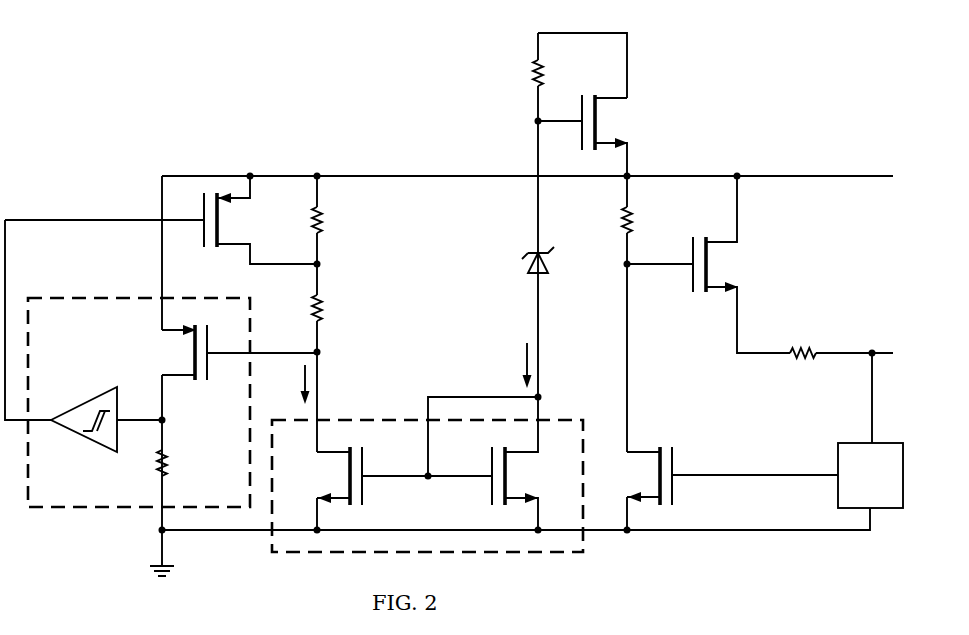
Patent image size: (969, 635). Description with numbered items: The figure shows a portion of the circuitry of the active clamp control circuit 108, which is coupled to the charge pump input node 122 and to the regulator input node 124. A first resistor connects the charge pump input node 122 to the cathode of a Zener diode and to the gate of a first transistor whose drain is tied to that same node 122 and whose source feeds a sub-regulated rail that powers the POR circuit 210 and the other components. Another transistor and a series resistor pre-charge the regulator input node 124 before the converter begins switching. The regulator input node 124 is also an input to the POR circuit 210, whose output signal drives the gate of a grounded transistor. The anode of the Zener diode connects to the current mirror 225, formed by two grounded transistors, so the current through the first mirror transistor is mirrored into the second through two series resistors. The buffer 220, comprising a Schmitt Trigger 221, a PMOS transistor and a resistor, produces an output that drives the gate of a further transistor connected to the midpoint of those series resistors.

The active clamp control circuit 108 is at (246, 50).
The node CP_IN 122 is at (629, 52).
The node LDO_IN 124 is at (866, 358).
The POR circuit 210 is at (887, 512).
The buffer 220 is at (83, 291).
The Schmitt Trigger 221 is at (83, 438).
The current mirror 225 is at (411, 411).